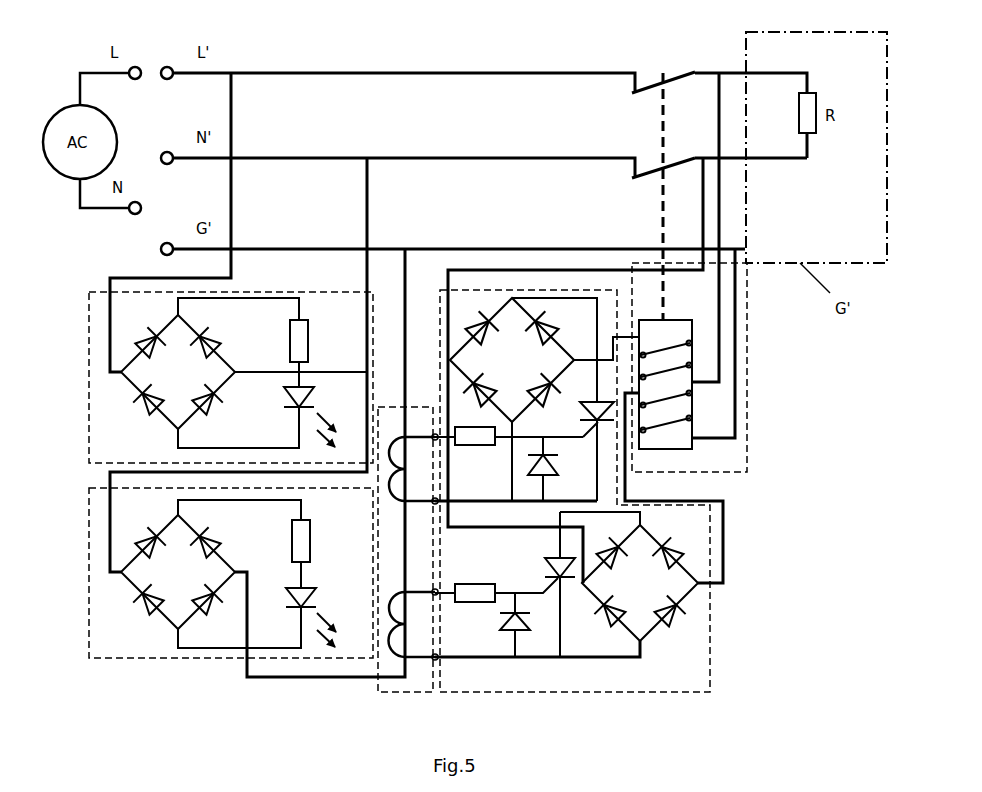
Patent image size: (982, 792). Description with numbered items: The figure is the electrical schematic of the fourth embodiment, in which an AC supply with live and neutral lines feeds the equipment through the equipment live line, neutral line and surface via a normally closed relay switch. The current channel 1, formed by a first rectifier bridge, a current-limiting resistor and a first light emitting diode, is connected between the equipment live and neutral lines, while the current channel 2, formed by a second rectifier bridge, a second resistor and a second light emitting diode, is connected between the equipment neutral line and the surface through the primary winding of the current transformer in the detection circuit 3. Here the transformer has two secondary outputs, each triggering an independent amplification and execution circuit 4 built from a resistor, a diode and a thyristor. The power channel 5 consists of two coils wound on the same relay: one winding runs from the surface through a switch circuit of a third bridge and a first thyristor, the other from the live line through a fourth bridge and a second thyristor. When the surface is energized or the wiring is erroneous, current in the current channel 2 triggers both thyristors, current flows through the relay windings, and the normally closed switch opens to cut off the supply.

The current channel 1 is at (105, 415).
The current channel 2 is at (105, 632).
The detection circuit 3 is at (397, 685).
The amplification and execution circuit 4 is at (697, 617).
The power channel 5 is at (737, 452).